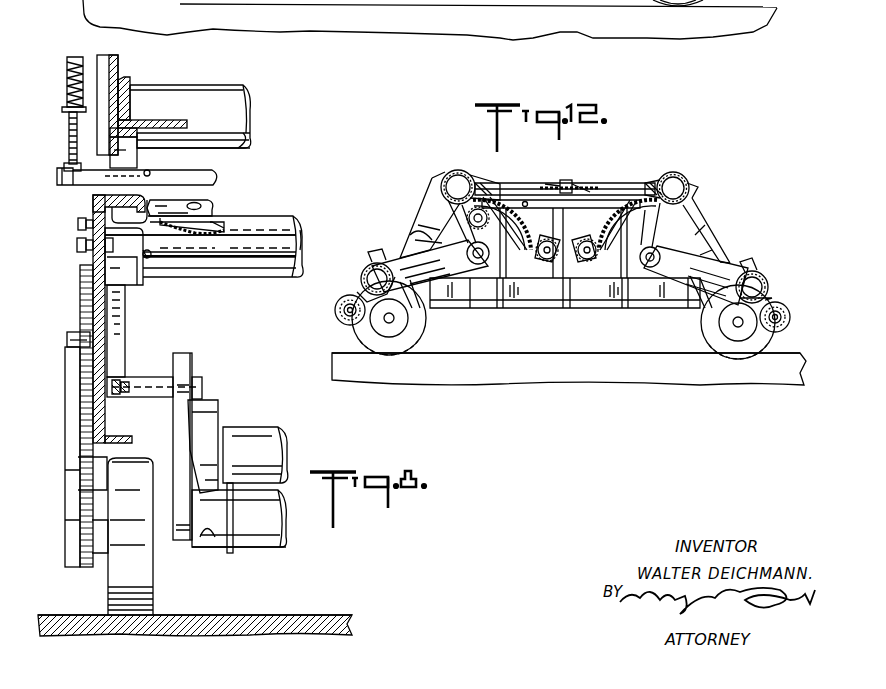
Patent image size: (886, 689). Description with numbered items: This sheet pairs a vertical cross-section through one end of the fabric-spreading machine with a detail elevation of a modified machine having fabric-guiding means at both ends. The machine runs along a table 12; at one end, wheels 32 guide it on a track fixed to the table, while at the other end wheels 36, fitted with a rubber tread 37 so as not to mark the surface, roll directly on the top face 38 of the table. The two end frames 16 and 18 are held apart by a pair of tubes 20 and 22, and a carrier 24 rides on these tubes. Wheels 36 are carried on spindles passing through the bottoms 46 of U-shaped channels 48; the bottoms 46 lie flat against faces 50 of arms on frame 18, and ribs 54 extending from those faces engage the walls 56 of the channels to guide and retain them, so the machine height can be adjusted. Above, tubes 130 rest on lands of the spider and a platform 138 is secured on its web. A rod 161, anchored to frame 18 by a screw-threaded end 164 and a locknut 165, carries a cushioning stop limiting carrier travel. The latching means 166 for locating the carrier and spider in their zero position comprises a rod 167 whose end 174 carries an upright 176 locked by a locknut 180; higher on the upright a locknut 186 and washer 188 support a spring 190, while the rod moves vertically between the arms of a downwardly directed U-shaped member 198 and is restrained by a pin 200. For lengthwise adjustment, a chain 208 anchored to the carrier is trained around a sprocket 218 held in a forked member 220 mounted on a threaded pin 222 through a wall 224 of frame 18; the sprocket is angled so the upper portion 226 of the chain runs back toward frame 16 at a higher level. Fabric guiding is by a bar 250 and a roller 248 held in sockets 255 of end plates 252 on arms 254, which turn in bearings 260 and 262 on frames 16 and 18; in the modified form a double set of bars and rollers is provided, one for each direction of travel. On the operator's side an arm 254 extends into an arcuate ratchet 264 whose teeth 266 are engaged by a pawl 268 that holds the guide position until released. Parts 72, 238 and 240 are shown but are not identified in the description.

In FIG. 8, the table 12 is at (316, 612).
In FIG. 12, the table 12 is at (518, 350).
In FIG. 8, the top face of the table 38 is at (258, 588).
In FIG. 12, the top face of the table 38 is at (578, 333).
In FIG. 12, the end frame 16 is at (718, 193).
In FIG. 8, the end frame 18 is at (78, 280).
In FIG. 8, the tube 20 is at (285, 258).
In FIG. 12, the tube 20 is at (468, 160).
In FIG. 12, the tube 22 is at (682, 173).
In FIG. 12, the carrier 24 is at (568, 176).
In FIG. 12, the wheels 32 is at (426, 335).
In FIG. 8, the wheels 36 is at (110, 590).
In FIG. 8, the tread 37 is at (159, 594).
In FIG. 8, the bottoms of channels 46 is at (86, 353).
In FIG. 8, the channels 48 is at (68, 385).
In FIG. 8, the faces of arms 50 is at (103, 302).
In FIG. 8, the ribs 54 is at (92, 440).
In FIG. 8, the walls 56 is at (73, 332).
In FIG. 12, the cross bar 72 is at (496, 186).
In FIG. 8, the tubes 130 is at (228, 96).
In FIG. 8, the platform 138 is at (178, 122).
In FIG. 8, the rod 161 is at (151, 254).
In FIG. 8, the screw-threaded end 164 is at (77, 244).
In FIG. 8, the locknut 165 is at (98, 258).
In FIG. 8, the latching means 166 is at (65, 55).
In FIG. 8, the rod 167 is at (193, 170).
In FIG. 8, the end of rod 174 is at (93, 200).
In FIG. 8, the upright 176 is at (100, 141).
In FIG. 8, the locknut 180 is at (68, 168).
In FIG. 8, the locknut 186 is at (105, 108).
In FIG. 8, the washer 188 is at (62, 105).
In FIG. 8, the spring 190 is at (86, 58).
In FIG. 8, the U-shaped member 198 is at (125, 148).
In FIG. 8, the pin 200 is at (176, 167).
In FIG. 8, the chain 208 is at (262, 228).
In FIG. 8, the sprocket 218 is at (213, 212).
In FIG. 8, the forked member 220 is at (185, 205).
In FIG. 8, the threaded pin 222 is at (78, 226).
In FIG. 8, the wall of frame 224 is at (93, 218).
In FIG. 8, the upper portion of the chain 226 is at (255, 201).
In FIG. 12, the pivot 238 is at (563, 252).
In FIG. 12, the gear 240 is at (474, 222).
In FIG. 8, the roller 248 is at (290, 522).
In FIG. 12, the roller 248 is at (343, 322).
In FIG. 8, the bar 250 is at (275, 445).
In FIG. 12, the bar 250 is at (385, 266).
In FIG. 12, the end plates 252 is at (352, 290).
In FIG. 8, the arm 254 is at (188, 445).
In FIG. 12, the arm 254 is at (660, 296).
In FIG. 8, the sockets 255 is at (228, 427).
In FIG. 12, the bearing 260 is at (565, 293).
In FIG. 8, the bearing 262 is at (155, 372).
In FIG. 12, the arcuate ratchet 264 is at (528, 220).
In FIG. 12, the teeth 266 is at (512, 203).
In FIG. 12, the pawl 268 is at (556, 292).